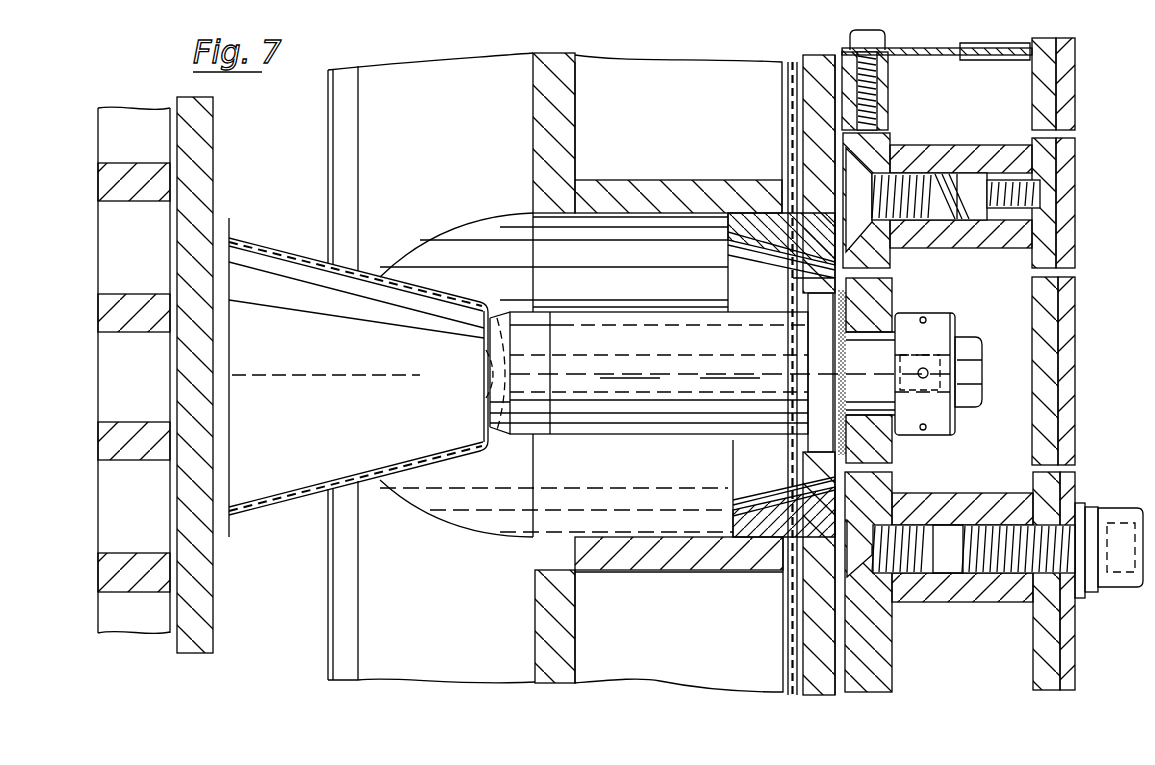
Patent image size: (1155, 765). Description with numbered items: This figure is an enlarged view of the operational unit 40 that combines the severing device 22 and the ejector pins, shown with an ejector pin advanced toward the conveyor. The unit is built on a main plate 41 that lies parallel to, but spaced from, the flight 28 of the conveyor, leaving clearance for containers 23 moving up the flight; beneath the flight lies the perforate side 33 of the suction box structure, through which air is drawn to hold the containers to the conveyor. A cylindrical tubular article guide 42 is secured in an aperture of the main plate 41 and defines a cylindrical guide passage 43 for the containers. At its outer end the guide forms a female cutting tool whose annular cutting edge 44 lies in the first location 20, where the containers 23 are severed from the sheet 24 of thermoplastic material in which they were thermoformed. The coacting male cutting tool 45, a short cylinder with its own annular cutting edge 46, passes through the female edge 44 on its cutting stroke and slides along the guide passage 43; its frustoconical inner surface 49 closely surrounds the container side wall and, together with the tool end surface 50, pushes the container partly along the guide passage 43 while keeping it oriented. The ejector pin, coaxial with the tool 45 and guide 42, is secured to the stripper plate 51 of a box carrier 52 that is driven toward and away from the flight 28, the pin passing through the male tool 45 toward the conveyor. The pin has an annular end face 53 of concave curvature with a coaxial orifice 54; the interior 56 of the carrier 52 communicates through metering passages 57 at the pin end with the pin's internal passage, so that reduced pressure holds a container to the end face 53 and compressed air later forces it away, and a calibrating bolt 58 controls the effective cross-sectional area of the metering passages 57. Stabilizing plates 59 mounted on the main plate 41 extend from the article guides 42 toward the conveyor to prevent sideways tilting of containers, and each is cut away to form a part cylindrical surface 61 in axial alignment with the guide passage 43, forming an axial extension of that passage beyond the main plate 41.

The first location 20 is at (936, 353).
The severing device 22 is at (828, 55).
The containers 23 is at (300, 508).
The sheet of thermoplastic material 24 is at (789, 60).
The flight 28 is at (212, 105).
The side of box structure 33 is at (97, 311).
The operational unit 40 is at (916, 38).
The main plate 41 is at (561, 107).
The article guides 42 is at (657, 186).
The guide passage 43 is at (533, 216).
The annular cutting edge 44 is at (766, 196).
The male cutting tool 45 is at (790, 242).
The annular cutting edge 46 is at (722, 225).
The frustoconical inner surface 49 is at (735, 245).
The tool end surface 50 is at (733, 522).
The stripper plate 51 is at (884, 298).
The box carrier 52 is at (1055, 115).
The annular end face 53 is at (487, 377).
The coaxial orifice 54 is at (487, 348).
The interior of the carrier 56 is at (997, 311).
The metering passages 57 is at (923, 380).
The calibrating bolt 58 is at (983, 372).
The stabilizing plates 59 is at (428, 60).
The part cylindrical surface 61 is at (421, 243).